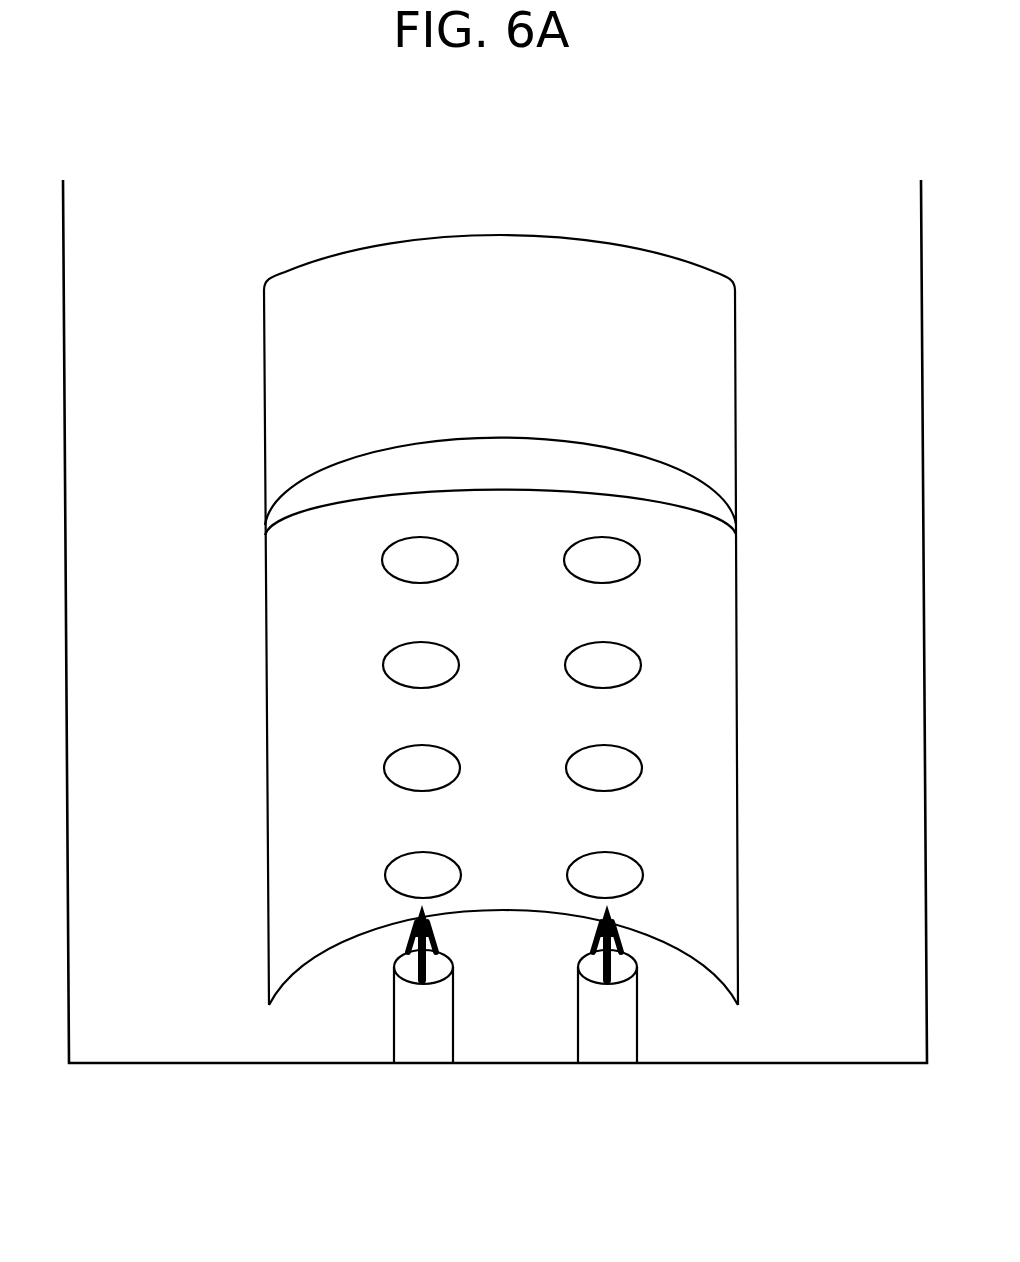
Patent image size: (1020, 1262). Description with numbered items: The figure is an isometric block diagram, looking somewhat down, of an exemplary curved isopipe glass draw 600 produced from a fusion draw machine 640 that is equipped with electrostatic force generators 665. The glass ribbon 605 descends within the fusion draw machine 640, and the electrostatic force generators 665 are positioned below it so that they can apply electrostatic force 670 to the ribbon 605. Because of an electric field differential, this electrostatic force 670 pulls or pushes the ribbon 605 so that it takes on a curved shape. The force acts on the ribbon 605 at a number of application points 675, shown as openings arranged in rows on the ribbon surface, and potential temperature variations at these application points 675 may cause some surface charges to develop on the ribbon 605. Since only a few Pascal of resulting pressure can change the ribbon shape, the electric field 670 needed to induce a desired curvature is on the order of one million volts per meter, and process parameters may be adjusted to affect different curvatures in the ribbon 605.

The curved isopipe glass draw 600 is at (645, 170).
The fusion draw machine 640 is at (63, 238).
The ribbon 605 is at (265, 555).
The application points 675 is at (382, 560).
The electrostatic force generators 665 is at (398, 1037).
The electrostatic force 670 is at (405, 941).